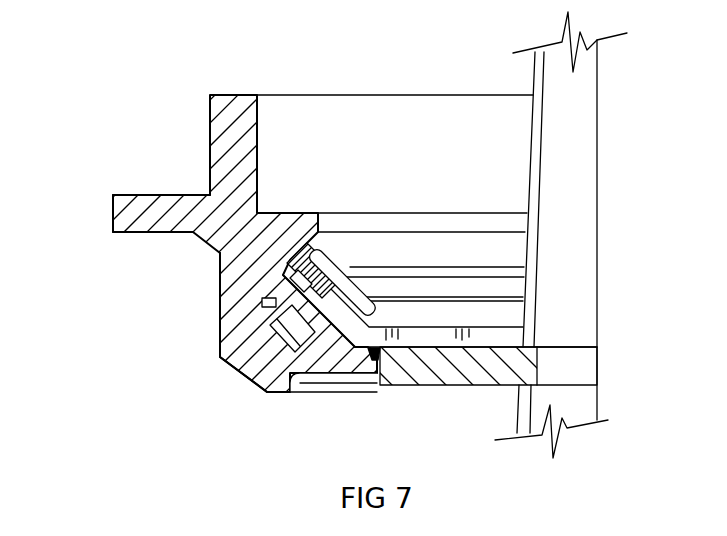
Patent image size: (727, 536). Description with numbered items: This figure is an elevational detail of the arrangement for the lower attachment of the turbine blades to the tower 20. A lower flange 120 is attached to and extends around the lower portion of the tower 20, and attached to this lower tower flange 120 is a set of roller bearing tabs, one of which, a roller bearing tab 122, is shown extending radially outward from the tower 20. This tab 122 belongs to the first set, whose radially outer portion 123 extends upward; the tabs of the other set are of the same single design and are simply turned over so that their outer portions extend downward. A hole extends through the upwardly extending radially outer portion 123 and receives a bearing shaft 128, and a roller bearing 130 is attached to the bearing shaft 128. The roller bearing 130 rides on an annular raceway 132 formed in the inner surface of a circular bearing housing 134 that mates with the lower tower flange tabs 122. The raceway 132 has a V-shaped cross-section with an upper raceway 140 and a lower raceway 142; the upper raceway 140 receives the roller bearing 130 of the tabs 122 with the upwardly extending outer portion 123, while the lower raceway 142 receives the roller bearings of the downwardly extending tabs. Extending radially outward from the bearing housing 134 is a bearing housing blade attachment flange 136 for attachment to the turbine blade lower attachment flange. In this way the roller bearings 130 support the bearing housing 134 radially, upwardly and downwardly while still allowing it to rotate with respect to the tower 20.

The tower 20 is at (580, 152).
The lower flange 120 is at (430, 385).
The roller bearing tab 122 is at (465, 337).
The radially outer portion 123 is at (330, 247).
The bearing shaft 128 is at (290, 284).
The roller bearing 130 is at (272, 332).
The annular raceway 132 is at (243, 377).
The bearing housing 134 is at (218, 122).
The bearing housing blade attachment flange 136 is at (120, 217).
The upper raceway 140 is at (278, 320).
The lower raceway 142 is at (300, 372).